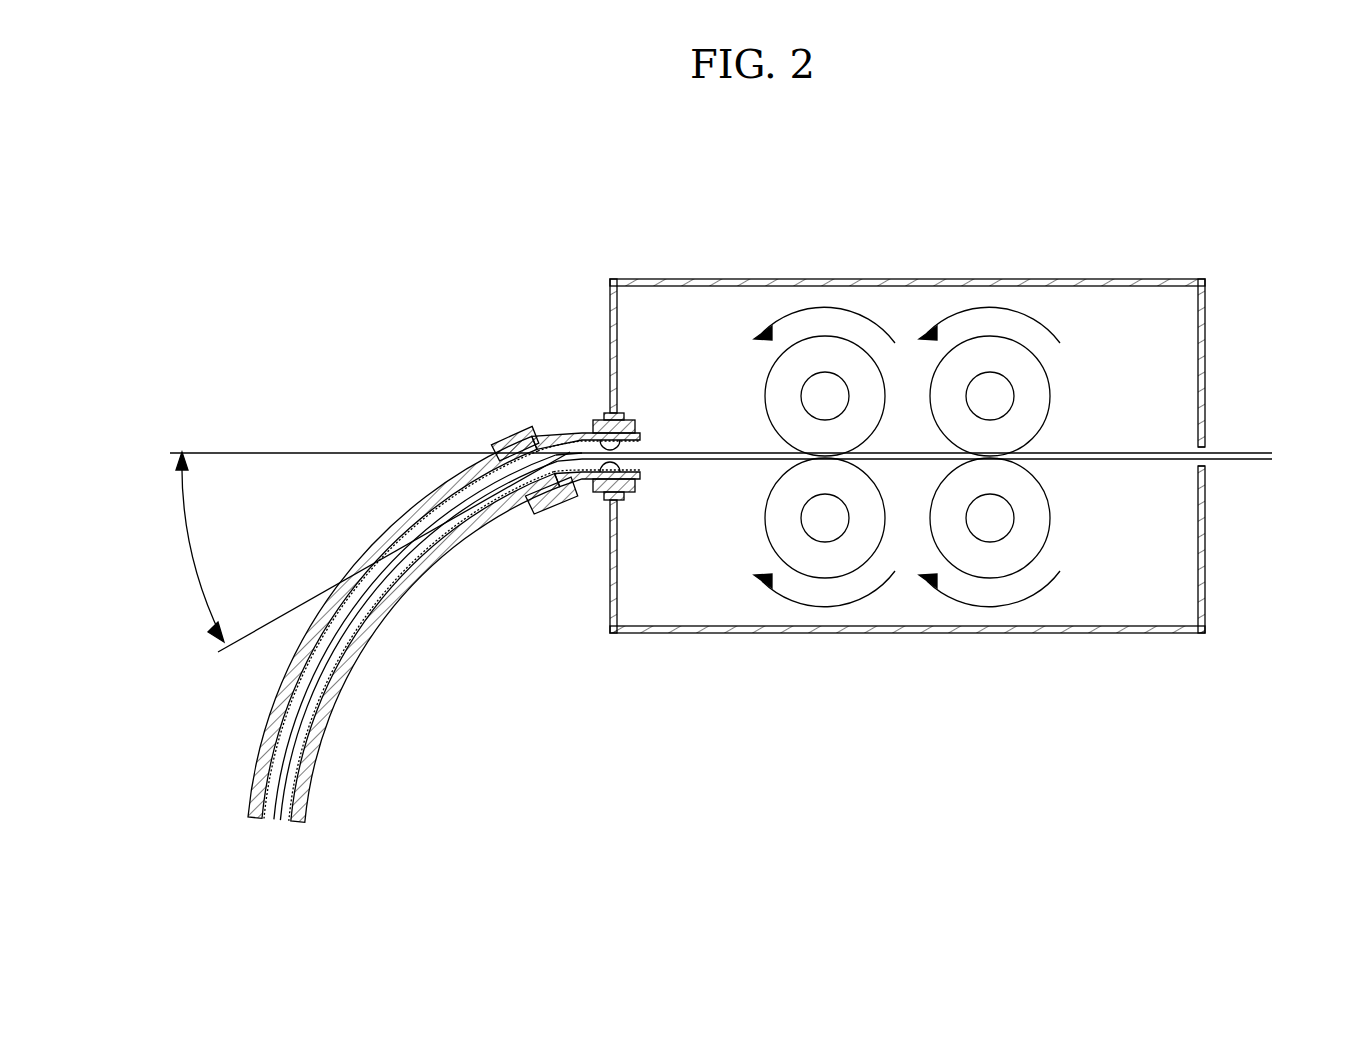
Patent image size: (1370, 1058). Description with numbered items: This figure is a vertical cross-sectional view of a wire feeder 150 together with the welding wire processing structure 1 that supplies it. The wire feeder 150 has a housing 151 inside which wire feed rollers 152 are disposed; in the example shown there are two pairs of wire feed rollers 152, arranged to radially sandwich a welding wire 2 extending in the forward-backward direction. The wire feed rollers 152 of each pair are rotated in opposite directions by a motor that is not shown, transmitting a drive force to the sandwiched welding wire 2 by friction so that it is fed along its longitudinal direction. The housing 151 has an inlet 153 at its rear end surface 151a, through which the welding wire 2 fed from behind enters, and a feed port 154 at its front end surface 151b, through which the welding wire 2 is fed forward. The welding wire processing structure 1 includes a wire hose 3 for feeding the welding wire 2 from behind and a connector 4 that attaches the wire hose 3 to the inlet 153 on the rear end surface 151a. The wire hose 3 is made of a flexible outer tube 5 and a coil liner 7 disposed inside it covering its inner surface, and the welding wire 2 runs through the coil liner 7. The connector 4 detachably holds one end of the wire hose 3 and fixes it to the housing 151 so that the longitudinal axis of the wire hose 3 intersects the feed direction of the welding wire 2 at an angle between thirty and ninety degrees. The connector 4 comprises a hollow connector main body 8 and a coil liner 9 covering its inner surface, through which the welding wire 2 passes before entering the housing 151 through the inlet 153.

The welding wire processing structure 1 is at (357, 388).
The welding wire 2 is at (905, 462).
The wire hose 3 is at (340, 720).
The connector 4 is at (549, 521).
The outer tube 5 is at (404, 629).
The coil liner 7 is at (478, 520).
The connector main body 8 is at (582, 492).
The coil liner 9 is at (614, 501).
The wire feeder 150 is at (904, 419).
The housing 151 is at (904, 421).
The rear end surface 151a is at (611, 610).
The front end surface 151b is at (1205, 392).
The wire feed rollers 152 is at (765, 393).
The inlet 153 is at (590, 430).
The feed port 154 is at (1205, 473).